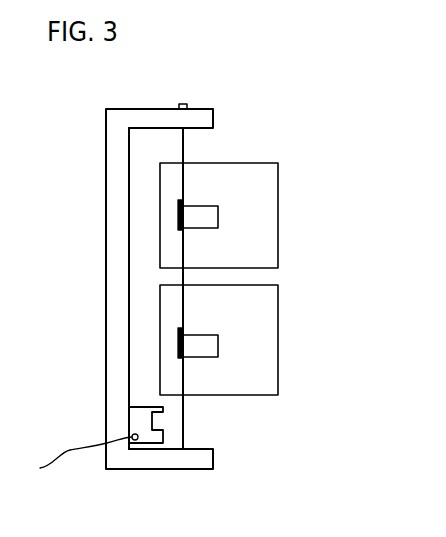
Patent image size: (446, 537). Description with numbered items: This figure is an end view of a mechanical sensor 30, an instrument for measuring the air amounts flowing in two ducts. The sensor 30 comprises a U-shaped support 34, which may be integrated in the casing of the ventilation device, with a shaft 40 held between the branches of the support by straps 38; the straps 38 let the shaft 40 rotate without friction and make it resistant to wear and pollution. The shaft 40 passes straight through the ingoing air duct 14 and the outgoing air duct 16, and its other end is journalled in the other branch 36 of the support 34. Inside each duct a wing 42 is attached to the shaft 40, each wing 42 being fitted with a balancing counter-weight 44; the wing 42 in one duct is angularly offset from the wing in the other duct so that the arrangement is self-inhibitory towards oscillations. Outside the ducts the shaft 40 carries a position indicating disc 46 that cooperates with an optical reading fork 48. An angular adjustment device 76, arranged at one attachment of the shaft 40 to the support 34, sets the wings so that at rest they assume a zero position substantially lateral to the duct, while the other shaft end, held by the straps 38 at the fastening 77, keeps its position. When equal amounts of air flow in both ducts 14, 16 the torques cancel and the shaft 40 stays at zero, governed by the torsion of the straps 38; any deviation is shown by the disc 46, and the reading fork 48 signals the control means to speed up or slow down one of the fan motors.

The ingoing air duct 14 is at (278, 227).
The outgoing air duct 16 is at (278, 355).
The sensor 30 is at (197, 239).
The support 34 is at (118, 277).
The branch 36 is at (158, 118).
The straps 38 is at (183, 135).
The shaft 40 is at (183, 185).
The wing 42 is at (207, 217).
The counter-weight 44 is at (178, 213).
The position indicating disc 46 is at (152, 421).
The optical reading fork 48 is at (145, 440).
The angular adjustment device 76 is at (187, 105).
The fastening for straps 77 is at (187, 453).